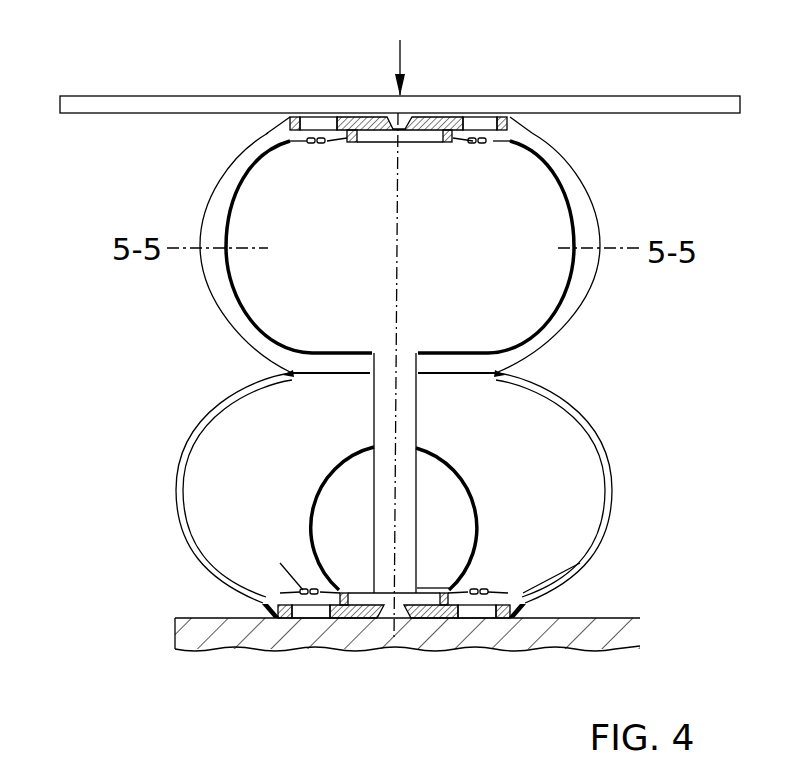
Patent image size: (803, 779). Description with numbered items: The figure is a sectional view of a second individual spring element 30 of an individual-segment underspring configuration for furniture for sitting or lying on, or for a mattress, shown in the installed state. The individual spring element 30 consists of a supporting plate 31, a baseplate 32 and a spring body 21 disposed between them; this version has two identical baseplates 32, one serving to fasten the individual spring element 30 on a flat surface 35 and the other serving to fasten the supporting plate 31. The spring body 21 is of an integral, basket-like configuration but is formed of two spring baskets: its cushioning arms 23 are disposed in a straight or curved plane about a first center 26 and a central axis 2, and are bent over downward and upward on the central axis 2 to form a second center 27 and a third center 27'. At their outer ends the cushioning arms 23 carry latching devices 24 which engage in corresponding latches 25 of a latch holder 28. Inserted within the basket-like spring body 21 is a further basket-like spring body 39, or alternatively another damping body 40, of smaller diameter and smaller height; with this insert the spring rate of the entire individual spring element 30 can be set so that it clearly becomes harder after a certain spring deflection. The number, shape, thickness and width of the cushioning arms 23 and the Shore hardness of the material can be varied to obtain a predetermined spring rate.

The central axis 2 is at (396, 297).
The spring body 21 is at (567, 367).
The cushioning arms 23 is at (577, 300).
The latching devices 24 is at (262, 598).
The latches 25 is at (280, 563).
The first center 26 is at (500, 247).
The second center 27 is at (520, 152).
The third center 27' is at (588, 567).
The latch holder 28 is at (345, 607).
The individual spring element 30 is at (399, 51).
The supporting plate 31 is at (617, 98).
The baseplate 32 is at (420, 607).
The flat surface 35 is at (195, 634).
The further basket-like spring body 39 is at (477, 522).
The damping body 40 is at (343, 520).